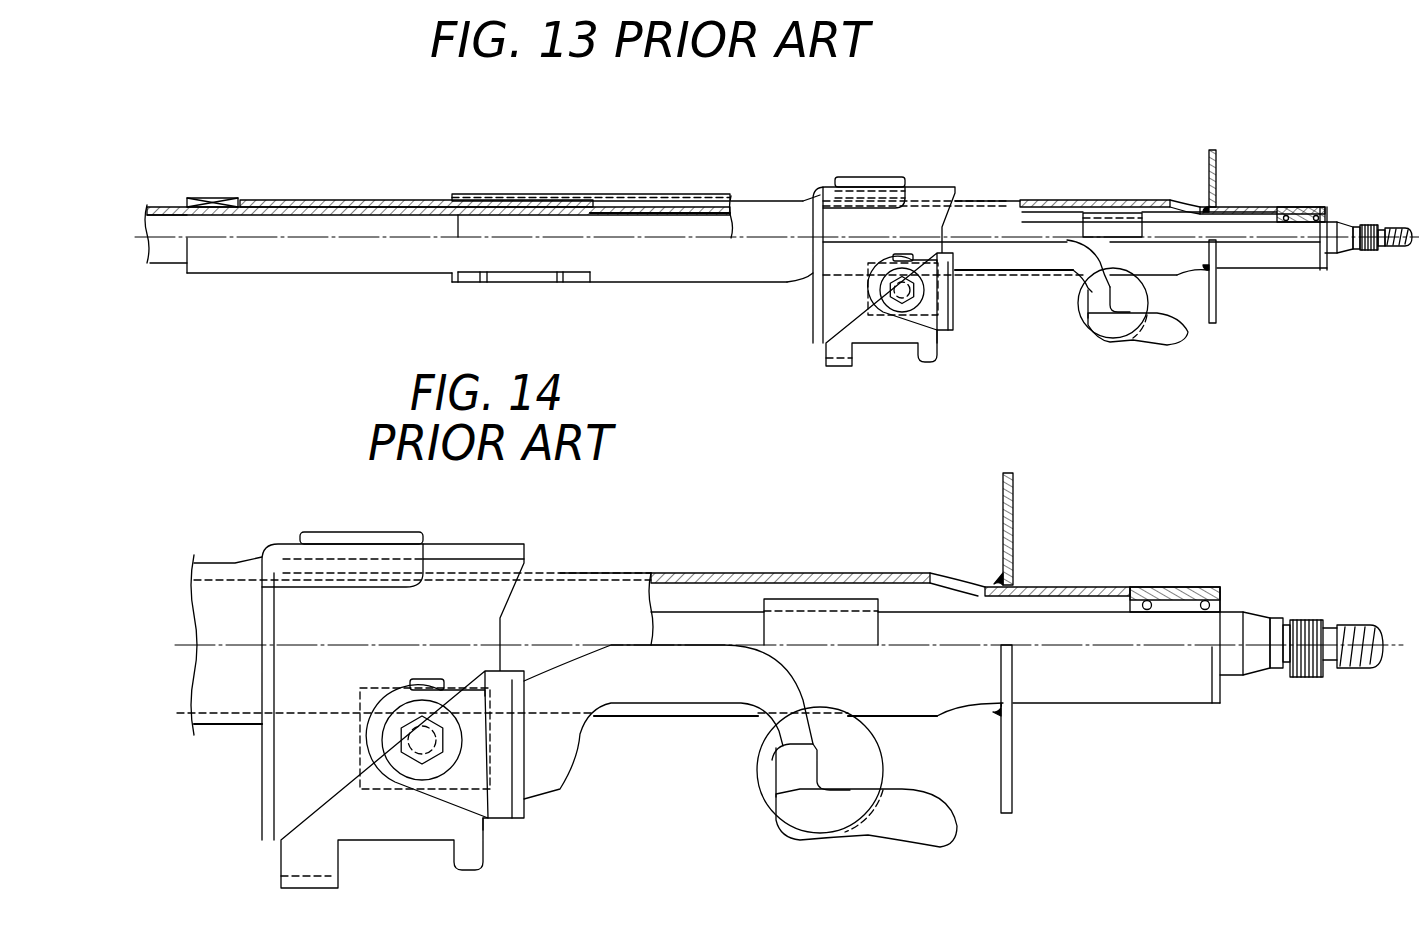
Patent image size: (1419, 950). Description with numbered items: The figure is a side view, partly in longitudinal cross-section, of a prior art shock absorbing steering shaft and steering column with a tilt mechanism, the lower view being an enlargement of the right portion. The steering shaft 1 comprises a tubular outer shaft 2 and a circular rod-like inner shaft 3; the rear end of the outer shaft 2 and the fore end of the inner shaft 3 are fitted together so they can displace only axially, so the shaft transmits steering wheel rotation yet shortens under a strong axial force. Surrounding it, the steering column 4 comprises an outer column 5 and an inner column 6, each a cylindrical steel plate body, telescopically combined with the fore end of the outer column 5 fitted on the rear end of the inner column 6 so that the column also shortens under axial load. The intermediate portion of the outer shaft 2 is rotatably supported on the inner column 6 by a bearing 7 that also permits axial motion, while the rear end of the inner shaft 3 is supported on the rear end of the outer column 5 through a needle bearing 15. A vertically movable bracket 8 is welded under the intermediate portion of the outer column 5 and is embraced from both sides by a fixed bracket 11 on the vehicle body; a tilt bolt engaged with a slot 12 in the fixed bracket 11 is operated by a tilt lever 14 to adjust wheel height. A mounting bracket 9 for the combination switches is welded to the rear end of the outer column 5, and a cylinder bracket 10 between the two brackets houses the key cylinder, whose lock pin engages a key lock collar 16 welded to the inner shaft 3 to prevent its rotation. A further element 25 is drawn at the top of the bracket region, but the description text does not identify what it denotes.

In FIG. 13, the steering shaft 1 is at (678, 222).
In FIG. 13, the outer shaft 2 is at (330, 205).
In FIG. 13, the inner shaft 3 is at (722, 225).
In FIG. 14, the inner shaft 3 is at (902, 628).
In FIG. 13, the steering column 4 is at (530, 196).
In FIG. 14, the steering column 4 is at (548, 603).
In FIG. 13, the outer column 5 is at (652, 195).
In FIG. 14, the outer column 5 is at (815, 573).
In FIG. 13, the inner column 6 is at (424, 200).
In FIG. 13, the bearing 7 is at (228, 198).
In FIG. 13, the vertically movable bracket 8 is at (875, 312).
In FIG. 14, the vertically movable bracket 8 is at (370, 793).
In FIG. 13, the mounting bracket 9 is at (1208, 160).
In FIG. 14, the mounting bracket 9 is at (1016, 490).
In FIG. 13, the cylinder bracket 10 is at (1078, 325).
In FIG. 14, the cylinder bracket 10 is at (760, 804).
In FIG. 13, the fixed bracket 11 is at (926, 218).
In FIG. 14, the fixed bracket 11 is at (297, 607).
In FIG. 13, the slot 12 is at (938, 322).
In FIG. 14, the slot 12 is at (490, 816).
In FIG. 13, the tilt lever 14 is at (1172, 332).
In FIG. 14, the tilt lever 14 is at (924, 825).
In FIG. 13, the needle bearing 15 is at (1297, 207).
In FIG. 14, the needle bearing 15 is at (1167, 607).
In FIG. 13, the key lock collar 16 is at (1093, 222).
In FIG. 14, the key lock collar 16 is at (777, 628).
In FIG. 13, the spring clip 25 is at (867, 177).
In FIG. 14, the spring clip 25 is at (378, 535).